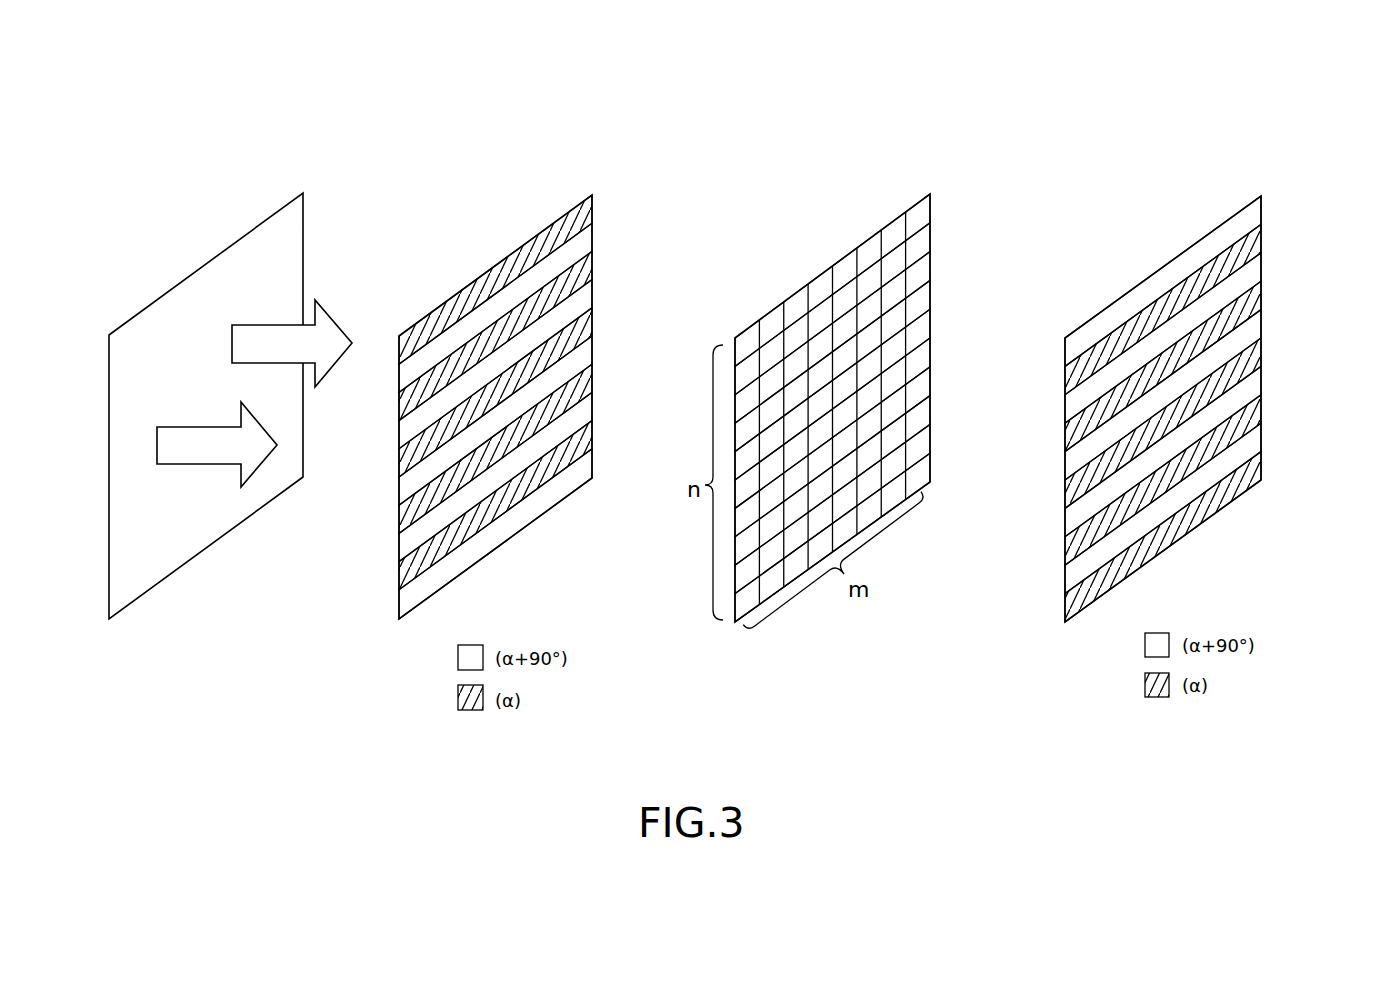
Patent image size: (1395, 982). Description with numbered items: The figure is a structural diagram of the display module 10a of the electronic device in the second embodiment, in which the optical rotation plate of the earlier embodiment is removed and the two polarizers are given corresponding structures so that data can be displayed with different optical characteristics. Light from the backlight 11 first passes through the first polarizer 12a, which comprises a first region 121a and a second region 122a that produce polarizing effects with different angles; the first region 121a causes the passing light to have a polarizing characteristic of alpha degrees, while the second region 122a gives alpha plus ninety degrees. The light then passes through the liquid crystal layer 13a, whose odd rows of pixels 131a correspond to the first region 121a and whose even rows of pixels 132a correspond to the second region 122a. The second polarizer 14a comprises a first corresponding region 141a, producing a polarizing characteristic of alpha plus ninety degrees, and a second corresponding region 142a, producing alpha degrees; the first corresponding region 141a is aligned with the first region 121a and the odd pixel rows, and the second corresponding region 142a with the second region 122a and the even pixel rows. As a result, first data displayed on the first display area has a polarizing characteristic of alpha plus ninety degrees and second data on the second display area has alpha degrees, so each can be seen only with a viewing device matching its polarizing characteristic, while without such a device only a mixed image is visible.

The display module 10a is at (1300, 67).
The backlight 11 is at (234, 246).
The first polarizer 12a is at (522, 245).
The first region 121a is at (598, 203).
The second region 122a is at (598, 233).
The liquid crystal layer 13a is at (871, 245).
The pixels of the odd rows 131a is at (936, 203).
The pixels of the even rows 132a is at (936, 233).
The second polarizer 14a is at (1198, 244).
The first corresponding region 141a is at (1266, 203).
The second corresponding region 142a is at (1266, 233).